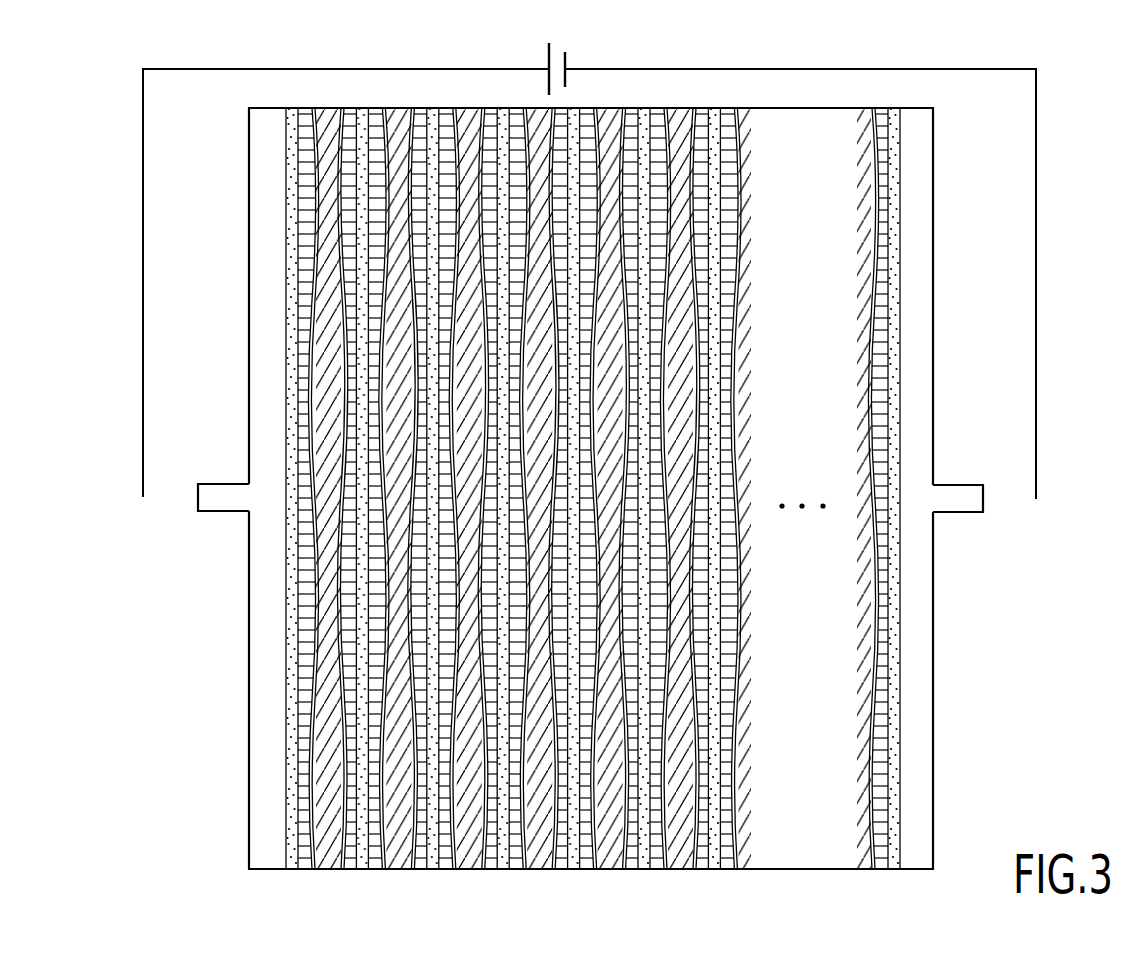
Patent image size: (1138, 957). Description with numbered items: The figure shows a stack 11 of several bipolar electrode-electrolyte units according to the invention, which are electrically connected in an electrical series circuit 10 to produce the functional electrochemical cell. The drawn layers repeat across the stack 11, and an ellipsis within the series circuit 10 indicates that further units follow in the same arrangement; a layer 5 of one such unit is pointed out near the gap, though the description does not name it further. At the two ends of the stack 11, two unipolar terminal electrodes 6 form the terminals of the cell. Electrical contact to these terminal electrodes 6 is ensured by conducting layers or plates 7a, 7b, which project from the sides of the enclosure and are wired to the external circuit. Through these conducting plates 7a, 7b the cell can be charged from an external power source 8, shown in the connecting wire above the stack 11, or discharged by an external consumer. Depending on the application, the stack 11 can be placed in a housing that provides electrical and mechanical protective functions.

The separator layer 5 is at (752, 789).
The unipolar terminal electrode 6 is at (848, 755).
The conducting layer or plate 7a is at (223, 518).
The conducting layer or plate 7b is at (977, 514).
The external power source 8 is at (571, 60).
The electrical series circuit 10 is at (802, 488).
The stack 11 is at (466, 610).